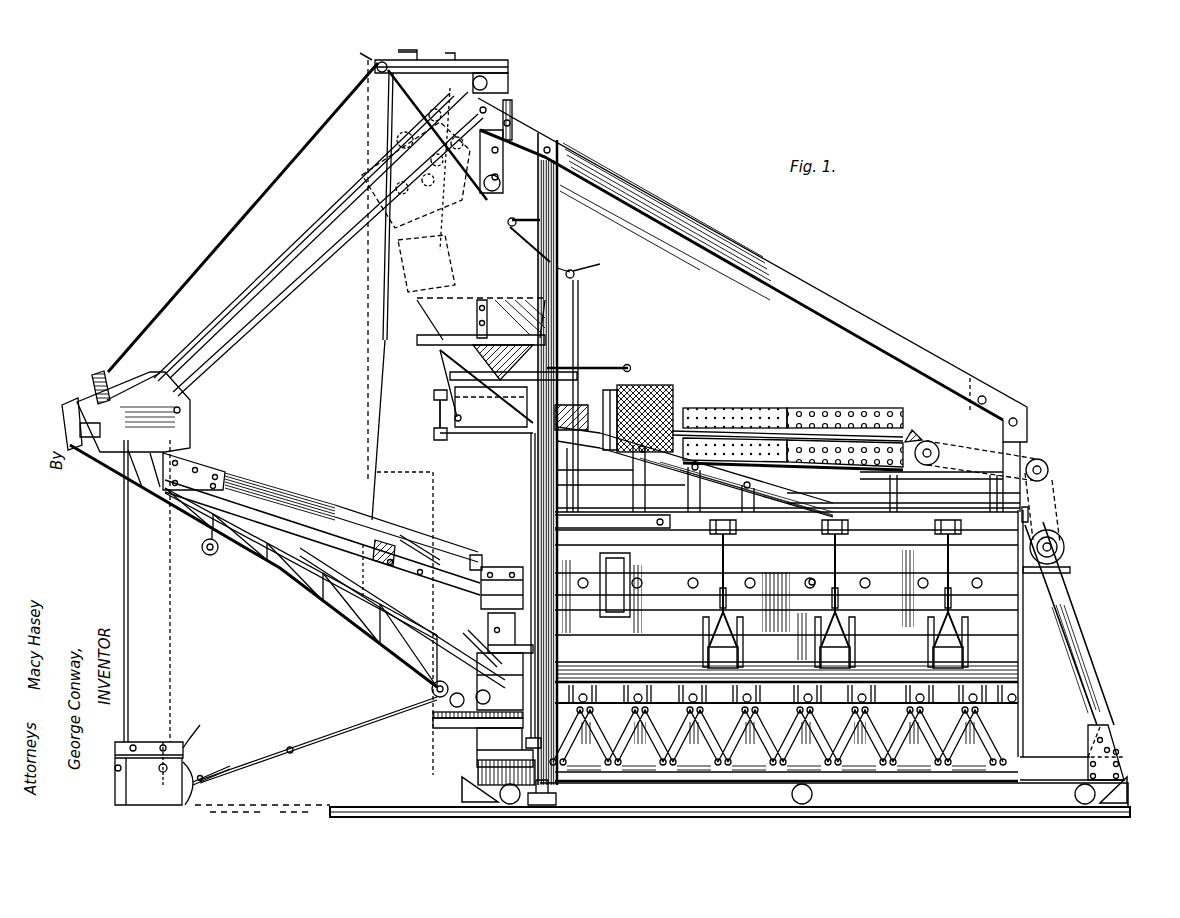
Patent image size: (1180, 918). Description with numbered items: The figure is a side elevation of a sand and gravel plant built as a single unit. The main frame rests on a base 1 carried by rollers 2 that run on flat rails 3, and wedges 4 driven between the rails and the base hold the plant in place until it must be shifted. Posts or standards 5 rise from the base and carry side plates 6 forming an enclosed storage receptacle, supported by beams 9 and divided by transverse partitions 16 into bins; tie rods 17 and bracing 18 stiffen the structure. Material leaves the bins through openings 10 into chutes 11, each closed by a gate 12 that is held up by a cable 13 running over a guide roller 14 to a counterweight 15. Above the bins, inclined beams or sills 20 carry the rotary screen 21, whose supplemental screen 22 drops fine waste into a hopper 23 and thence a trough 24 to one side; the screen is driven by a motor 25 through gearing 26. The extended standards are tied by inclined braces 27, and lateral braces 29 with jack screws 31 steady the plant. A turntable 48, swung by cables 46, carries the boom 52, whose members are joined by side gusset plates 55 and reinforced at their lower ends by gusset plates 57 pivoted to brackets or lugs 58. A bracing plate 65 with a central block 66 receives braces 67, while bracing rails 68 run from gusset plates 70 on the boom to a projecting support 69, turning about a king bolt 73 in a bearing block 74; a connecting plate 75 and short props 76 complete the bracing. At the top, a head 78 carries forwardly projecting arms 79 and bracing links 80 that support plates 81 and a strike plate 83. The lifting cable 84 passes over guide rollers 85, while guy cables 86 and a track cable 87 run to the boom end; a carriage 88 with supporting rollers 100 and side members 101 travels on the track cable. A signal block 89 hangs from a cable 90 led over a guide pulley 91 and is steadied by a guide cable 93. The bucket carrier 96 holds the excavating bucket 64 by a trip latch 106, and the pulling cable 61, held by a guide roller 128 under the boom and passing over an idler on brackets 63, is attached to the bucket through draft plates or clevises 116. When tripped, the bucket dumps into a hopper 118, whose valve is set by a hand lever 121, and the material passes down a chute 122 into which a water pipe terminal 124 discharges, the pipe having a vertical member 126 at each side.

The base 1 is at (1057, 765).
The rollers 2 is at (812, 794).
The flat rails 3 is at (890, 807).
The wedges 4 is at (462, 790).
The posts or standards 5 is at (559, 210).
The plates or boards 6 is at (789, 633).
The beams 9 is at (1010, 692).
The openings 10 is at (960, 620).
The chutes 11 is at (955, 636).
The gate or cut-off 12 is at (955, 656).
The cable 13 is at (838, 560).
The guide roller 14 is at (852, 523).
The counterweight 15 is at (842, 600).
The transverse partitions 16 is at (393, 562).
The tie rods 17 is at (812, 580).
The bracing 18 is at (1005, 728).
The beams or sills 20 is at (858, 440).
The rotary screen 21 is at (787, 425).
The supplemental screen 22 is at (650, 385).
The hopper or chute 23 is at (630, 530).
The trough or chute 24 is at (600, 565).
The motor 25 is at (1062, 538).
The gearing 26 is at (960, 486).
The inclined braces 27 is at (816, 298).
The lateral braces 29 is at (548, 466).
The jack screws 31 is at (556, 796).
The cables 46 is at (477, 737).
The turntable 48 is at (440, 722).
The boom 52 is at (253, 566).
The side gusset plates 55 is at (110, 480).
The gusset plates 57 is at (470, 680).
The brackets or lugs 58 is at (437, 698).
The hauling or pulling cable 61 is at (318, 735).
The brackets 63 is at (520, 637).
The excavating bucket 64 is at (160, 760).
The bracing plate 65 is at (360, 600).
The central block 66 is at (393, 600).
The braces 67 is at (442, 618).
The bracing rails 68 is at (282, 492).
The projecting support 69 is at (505, 567).
The gusset plates 70 is at (207, 466).
The king bolt 73 is at (522, 530).
The bearing block 74 is at (476, 556).
The connecting plate 75 is at (307, 512).
The short props 76 is at (424, 549).
The head 78 is at (508, 88).
The forwardly projecting arms 79 is at (508, 60).
The bracing links 80 is at (389, 150).
The plates 81 is at (503, 160).
The strike plate or trip 83 is at (487, 200).
The lifting cable 84 is at (262, 333).
The guide rollers 85 is at (520, 218).
The guy cables 86 is at (210, 330).
The track cable 87 is at (248, 290).
The carriage 88 is at (106, 368).
The signal block 89 is at (390, 215).
The cable 90 is at (200, 262).
The guide pulley 91 is at (372, 72).
The guide cable 93 is at (372, 384).
The bucket carrier 96 is at (128, 740).
The supporting rollers 100 is at (150, 372).
The members 101 is at (195, 436).
The trip latch 106 is at (197, 757).
The draft plates or clevises 116 is at (235, 780).
The hopper 118 is at (470, 305).
The hand lever 121 is at (600, 366).
The chute or trough 122 is at (487, 432).
The terminal 124 is at (435, 395).
The vertical member 126 is at (530, 672).
The guide roller 128 is at (210, 556).